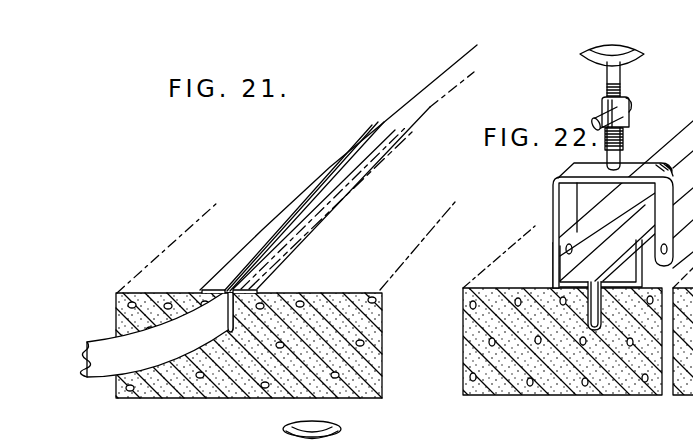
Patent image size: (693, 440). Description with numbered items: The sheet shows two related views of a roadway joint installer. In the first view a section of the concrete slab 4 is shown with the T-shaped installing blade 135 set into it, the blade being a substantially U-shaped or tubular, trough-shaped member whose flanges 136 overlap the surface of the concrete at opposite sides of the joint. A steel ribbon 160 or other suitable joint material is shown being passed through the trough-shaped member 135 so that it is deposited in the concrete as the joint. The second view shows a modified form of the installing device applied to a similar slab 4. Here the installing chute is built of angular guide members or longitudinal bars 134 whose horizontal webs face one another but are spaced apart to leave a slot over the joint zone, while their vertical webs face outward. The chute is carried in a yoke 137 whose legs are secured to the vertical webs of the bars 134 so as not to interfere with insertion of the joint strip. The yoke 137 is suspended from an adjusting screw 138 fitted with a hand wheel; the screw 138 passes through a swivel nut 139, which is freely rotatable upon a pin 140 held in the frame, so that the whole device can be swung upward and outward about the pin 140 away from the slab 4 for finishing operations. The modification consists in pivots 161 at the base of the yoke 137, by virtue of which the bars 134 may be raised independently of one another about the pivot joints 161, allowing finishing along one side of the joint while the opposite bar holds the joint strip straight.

In FIG. 21, the concrete slab 4 is at (183, 387).
In FIG. 21, the steel ribbon 160 is at (97, 358).
In FIG. 21, the flanges 136 is at (231, 266).
In FIG. 21, the installing blade 135 is at (278, 293).
In FIG. 22, the installing blade 135 is at (594, 306).
In FIG. 22, the guide members 134 is at (688, 121).
In FIG. 22, the pivots 161 is at (565, 250).
In FIG. 22, the yoke 137 is at (554, 189).
In FIG. 22, the adjusting screw 138 is at (618, 142).
In FIG. 22, the swivel nut 139 is at (603, 103).
In FIG. 22, the pin 140 is at (623, 117).